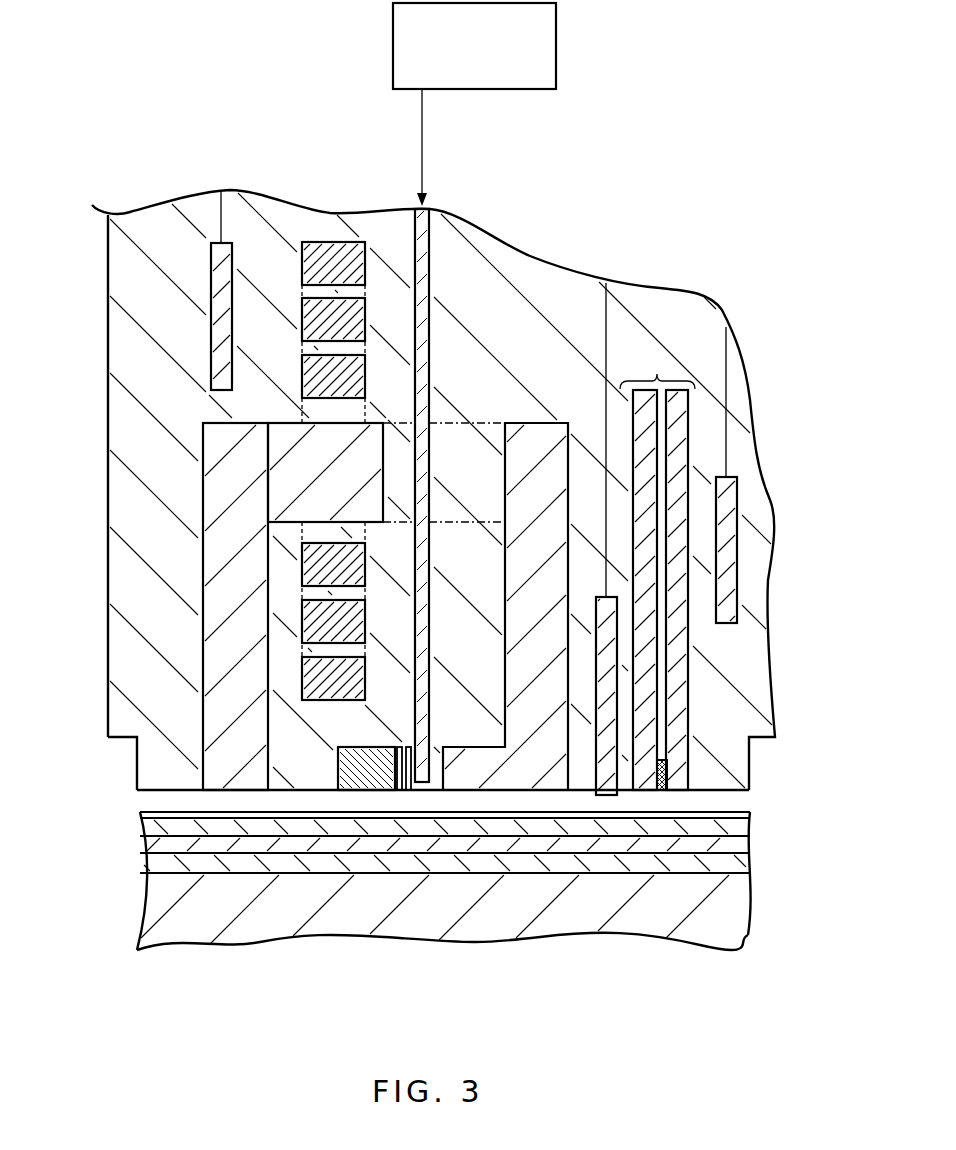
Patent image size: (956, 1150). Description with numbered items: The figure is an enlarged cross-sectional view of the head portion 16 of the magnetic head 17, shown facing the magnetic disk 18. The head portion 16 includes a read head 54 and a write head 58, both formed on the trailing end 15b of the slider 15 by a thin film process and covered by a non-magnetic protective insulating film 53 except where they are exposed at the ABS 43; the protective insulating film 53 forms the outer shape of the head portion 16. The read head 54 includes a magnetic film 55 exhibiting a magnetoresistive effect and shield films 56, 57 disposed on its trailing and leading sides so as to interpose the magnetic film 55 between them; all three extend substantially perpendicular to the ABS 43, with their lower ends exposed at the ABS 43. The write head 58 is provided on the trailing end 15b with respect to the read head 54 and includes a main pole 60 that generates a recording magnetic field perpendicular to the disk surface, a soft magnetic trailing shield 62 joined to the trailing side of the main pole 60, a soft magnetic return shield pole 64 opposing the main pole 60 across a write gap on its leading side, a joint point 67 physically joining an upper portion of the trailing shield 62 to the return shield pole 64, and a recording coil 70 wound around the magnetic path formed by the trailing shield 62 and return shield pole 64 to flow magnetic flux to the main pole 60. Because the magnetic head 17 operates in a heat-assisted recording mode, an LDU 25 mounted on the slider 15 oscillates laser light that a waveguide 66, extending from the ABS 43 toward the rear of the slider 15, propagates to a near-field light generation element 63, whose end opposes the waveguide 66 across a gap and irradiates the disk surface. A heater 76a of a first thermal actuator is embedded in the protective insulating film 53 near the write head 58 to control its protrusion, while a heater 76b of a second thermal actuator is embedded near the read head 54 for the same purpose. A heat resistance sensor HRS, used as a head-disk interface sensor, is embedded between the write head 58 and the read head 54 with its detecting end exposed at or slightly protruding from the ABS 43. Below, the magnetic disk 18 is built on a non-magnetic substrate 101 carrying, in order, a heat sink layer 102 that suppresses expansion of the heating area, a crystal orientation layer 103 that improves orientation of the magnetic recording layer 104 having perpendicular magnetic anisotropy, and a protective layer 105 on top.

The LDU 25 is at (393, 50).
The magnetic head 17 is at (142, 172).
The slider 15 is at (122, 461).
The trailing end 15b is at (108, 520).
The head portion 16 is at (550, 323).
The protective insulating film 53 is at (125, 305).
The write head 58 is at (182, 460).
The ABS 43 is at (745, 797).
The heater 76a is at (218, 267).
The heater 76b is at (727, 497).
The recording coil 70 is at (298, 373).
The joint point 67 is at (290, 435).
The trailing shield 62 is at (230, 765).
The waveguide 66 is at (425, 285).
The return shield pole 64 is at (530, 775).
The main pole 60 is at (365, 770).
The near-field light generation element 63 is at (400, 782).
The read head 54 is at (684, 565).
The shield film 56 is at (634, 415).
The shield film 57 is at (688, 415).
The heat resistance sensor HRS is at (600, 797).
The magnetic film 55 is at (665, 760).
The magnetic disk 18 is at (115, 926).
The protective layer 105 is at (728, 808).
The magnetic recording layer 104 is at (730, 823).
The crystal orientation layer 103 is at (740, 845).
The heat sink layer 102 is at (743, 865).
The substrate 101 is at (733, 903).